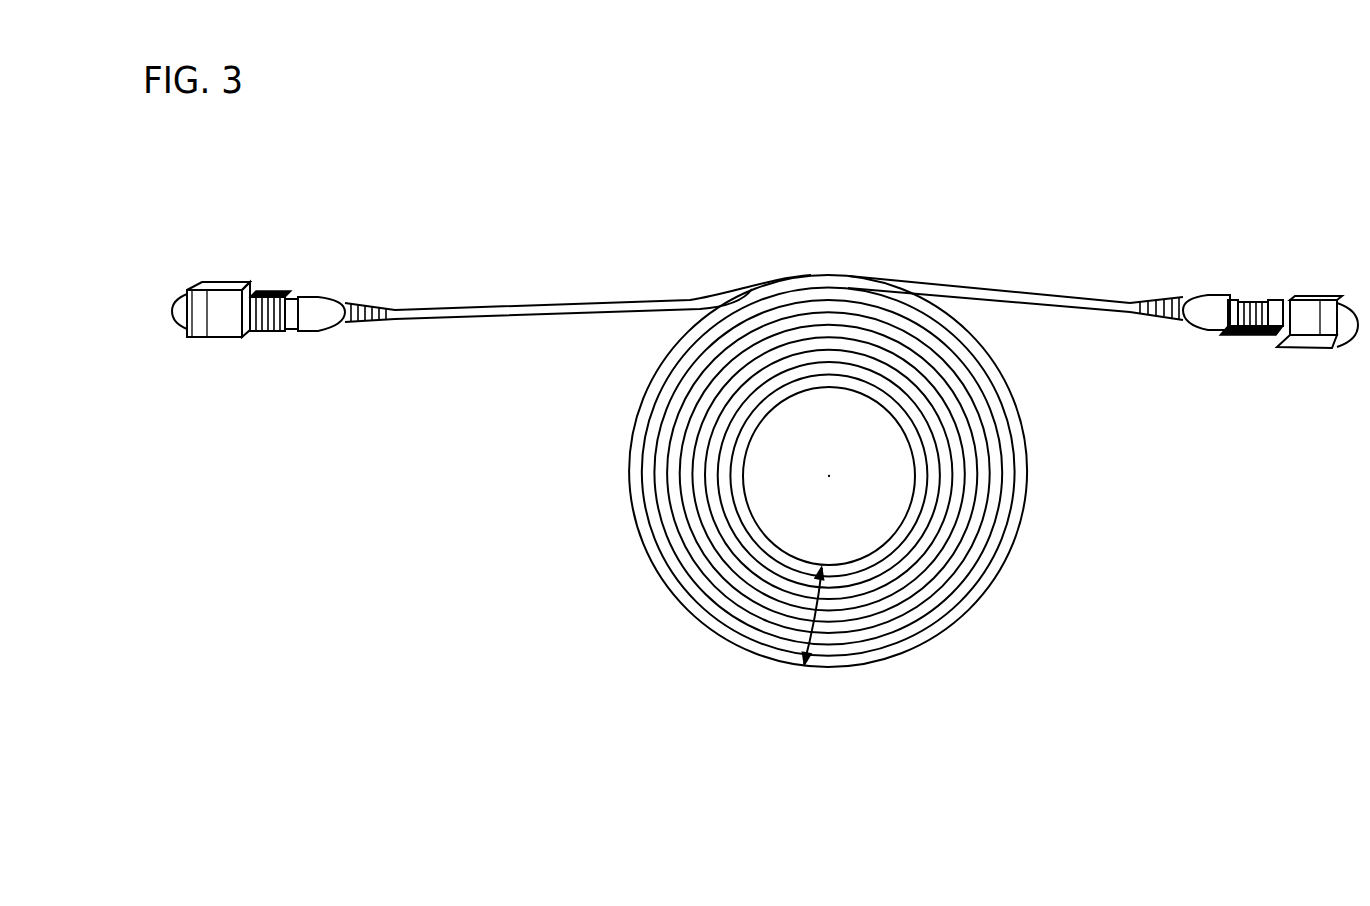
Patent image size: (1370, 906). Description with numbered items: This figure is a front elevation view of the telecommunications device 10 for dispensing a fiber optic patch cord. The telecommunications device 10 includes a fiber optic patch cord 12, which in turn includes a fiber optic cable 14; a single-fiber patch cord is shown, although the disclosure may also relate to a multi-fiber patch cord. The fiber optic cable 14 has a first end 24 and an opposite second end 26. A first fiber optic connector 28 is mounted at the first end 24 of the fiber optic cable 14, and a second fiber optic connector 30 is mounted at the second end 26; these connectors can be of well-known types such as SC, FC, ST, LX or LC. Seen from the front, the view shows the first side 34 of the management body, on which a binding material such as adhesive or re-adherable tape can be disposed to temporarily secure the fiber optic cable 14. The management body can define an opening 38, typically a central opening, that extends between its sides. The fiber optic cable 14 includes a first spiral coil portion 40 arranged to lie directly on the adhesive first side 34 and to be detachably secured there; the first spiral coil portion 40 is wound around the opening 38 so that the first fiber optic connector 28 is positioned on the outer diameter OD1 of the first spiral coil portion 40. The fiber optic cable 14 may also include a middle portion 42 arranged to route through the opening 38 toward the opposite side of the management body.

The telecommunications device 10 is at (1022, 134).
The fiber optic patch cord 12 is at (775, 278).
The fiber optic cable 14 is at (578, 298).
The first end 24 is at (1194, 294).
The second end 26 is at (400, 290).
The first fiber optic connector 28 is at (1242, 294).
The second fiber optic connector 30 is at (290, 282).
The first side 34 is at (750, 647).
The opening 38 is at (810, 508).
The first spiral coil portion 40 is at (655, 475).
The middle portion 42 is at (820, 393).
The outer diameter OD1 is at (815, 625).